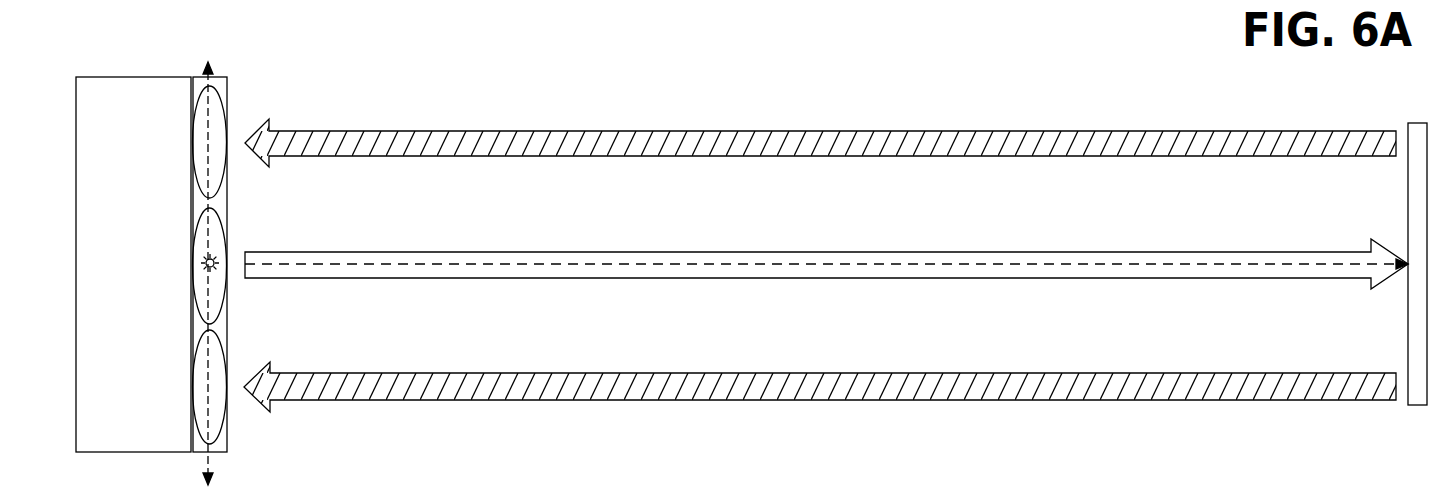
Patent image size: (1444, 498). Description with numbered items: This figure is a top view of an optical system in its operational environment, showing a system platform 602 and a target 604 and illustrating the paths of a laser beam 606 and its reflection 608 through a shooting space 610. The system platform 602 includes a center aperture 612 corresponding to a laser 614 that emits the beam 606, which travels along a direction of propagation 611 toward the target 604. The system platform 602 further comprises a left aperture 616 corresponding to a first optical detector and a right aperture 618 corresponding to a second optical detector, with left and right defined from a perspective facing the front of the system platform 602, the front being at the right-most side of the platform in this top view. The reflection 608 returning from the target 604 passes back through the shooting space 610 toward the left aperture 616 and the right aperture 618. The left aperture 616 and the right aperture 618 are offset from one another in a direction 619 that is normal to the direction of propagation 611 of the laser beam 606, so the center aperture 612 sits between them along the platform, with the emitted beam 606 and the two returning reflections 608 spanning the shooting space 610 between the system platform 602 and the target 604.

The system platform 602 is at (227, 448).
The target 604 is at (1418, 406).
The laser beam 606 is at (424, 252).
The reflection 608 is at (444, 131).
The shooting space 610 is at (872, 62).
The direction of propagation 611 is at (829, 264).
The center aperture 612 is at (207, 212).
The laser 614 is at (216, 257).
The left aperture 616 is at (207, 332).
The right aperture 618 is at (207, 90).
The direction 619 is at (207, 458).